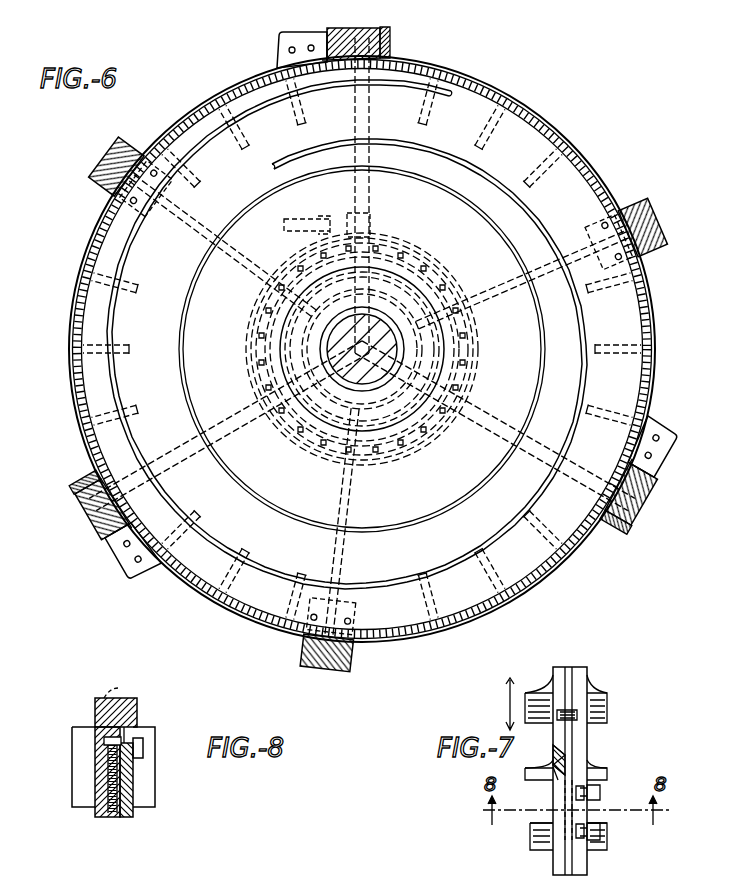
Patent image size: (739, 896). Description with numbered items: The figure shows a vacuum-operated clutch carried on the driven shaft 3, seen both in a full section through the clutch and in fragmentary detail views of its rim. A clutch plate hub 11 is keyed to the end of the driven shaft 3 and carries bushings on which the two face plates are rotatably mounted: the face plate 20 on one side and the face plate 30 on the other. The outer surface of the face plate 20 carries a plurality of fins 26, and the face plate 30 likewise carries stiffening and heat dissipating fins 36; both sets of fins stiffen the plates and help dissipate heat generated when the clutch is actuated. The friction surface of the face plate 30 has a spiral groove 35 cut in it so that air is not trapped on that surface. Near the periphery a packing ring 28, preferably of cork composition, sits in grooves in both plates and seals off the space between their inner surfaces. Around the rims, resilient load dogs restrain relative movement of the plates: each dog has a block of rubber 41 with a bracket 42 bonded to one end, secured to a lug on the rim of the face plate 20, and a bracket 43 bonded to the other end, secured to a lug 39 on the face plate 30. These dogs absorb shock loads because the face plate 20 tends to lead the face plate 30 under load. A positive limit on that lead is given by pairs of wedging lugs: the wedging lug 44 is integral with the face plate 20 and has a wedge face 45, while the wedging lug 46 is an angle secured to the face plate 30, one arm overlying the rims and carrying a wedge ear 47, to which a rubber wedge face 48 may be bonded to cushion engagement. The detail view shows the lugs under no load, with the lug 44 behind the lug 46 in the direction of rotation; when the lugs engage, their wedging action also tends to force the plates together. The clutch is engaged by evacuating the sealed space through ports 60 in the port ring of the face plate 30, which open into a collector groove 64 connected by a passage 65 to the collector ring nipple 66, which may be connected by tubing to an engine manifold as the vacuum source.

In FIG. 6, the driven shaft 3 is at (380, 360).
In FIG. 6, the clutch plate hub 11 is at (382, 380).
In FIG. 8, the face plate 20 is at (96, 770).
In FIG. 7, the face plate 20 is at (552, 672).
In FIG. 8, the fins 26 is at (80, 797).
In FIG. 7, the fins 26 is at (536, 696).
In FIG. 6, the packing ring 28 is at (528, 120).
In FIG. 8, the packing ring 28 is at (128, 710).
In FIG. 7, the packing ring 28 is at (568, 666).
In FIG. 8, the face plate 30 is at (128, 768).
In FIG. 7, the face plate 30 is at (578, 672).
In FIG. 6, the spiral groove 35 is at (410, 80).
In FIG. 8, the fins 36 is at (145, 800).
In FIG. 7, the fins 36 is at (606, 695).
In FIG. 6, the lug 39 is at (280, 42).
In FIG. 6, the block of rubber 41 is at (376, 30).
In FIG. 6, the bracket 42 is at (392, 44).
In FIG. 6, the bracket 43 is at (330, 34).
In FIG. 8, the wedging lug 44 is at (104, 726).
In FIG. 7, the wedging lug 44 is at (560, 738).
In FIG. 7, the wedge face 45 is at (566, 760).
In FIG. 6, the wedging lug 46 is at (126, 148).
In FIG. 8, the wedging lug 46 is at (138, 708).
In FIG. 7, the wedging lug 46 is at (601, 800).
In FIG. 8, the wedge ear 47 is at (120, 685).
In FIG. 7, the wedge ear 47 is at (555, 775).
In FIG. 7, the rubber wedge face 48 is at (566, 768).
In FIG. 6, the ports 60 is at (402, 258).
In FIG. 6, the collector groove 64 is at (452, 264).
In FIG. 6, the passage 65 is at (372, 240).
In FIG. 6, the collector ring nipple 66 is at (375, 222).